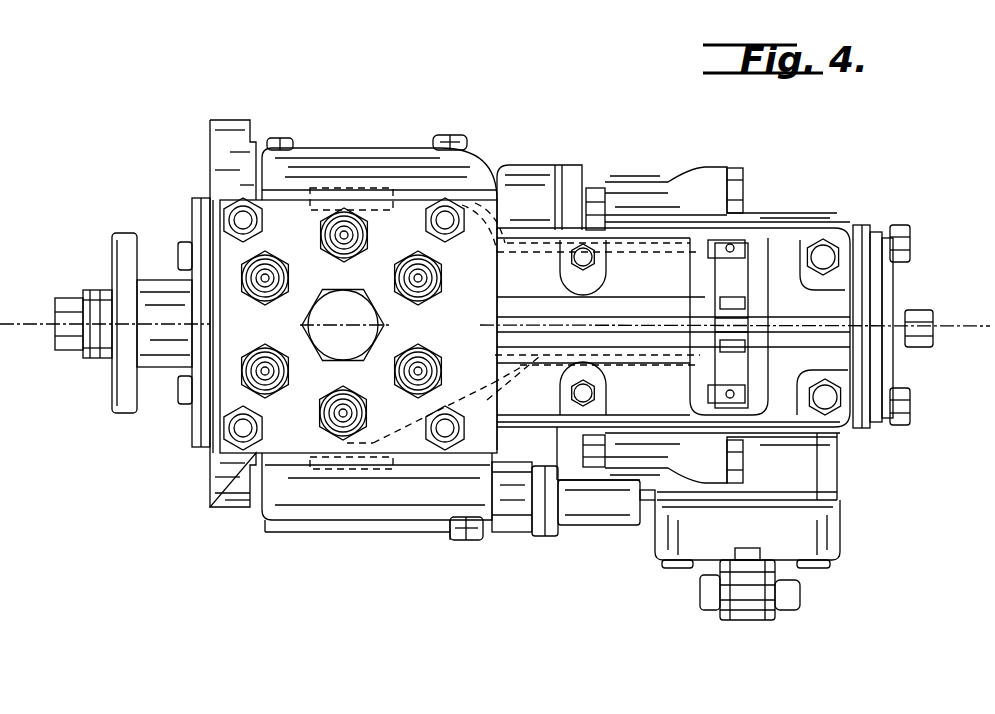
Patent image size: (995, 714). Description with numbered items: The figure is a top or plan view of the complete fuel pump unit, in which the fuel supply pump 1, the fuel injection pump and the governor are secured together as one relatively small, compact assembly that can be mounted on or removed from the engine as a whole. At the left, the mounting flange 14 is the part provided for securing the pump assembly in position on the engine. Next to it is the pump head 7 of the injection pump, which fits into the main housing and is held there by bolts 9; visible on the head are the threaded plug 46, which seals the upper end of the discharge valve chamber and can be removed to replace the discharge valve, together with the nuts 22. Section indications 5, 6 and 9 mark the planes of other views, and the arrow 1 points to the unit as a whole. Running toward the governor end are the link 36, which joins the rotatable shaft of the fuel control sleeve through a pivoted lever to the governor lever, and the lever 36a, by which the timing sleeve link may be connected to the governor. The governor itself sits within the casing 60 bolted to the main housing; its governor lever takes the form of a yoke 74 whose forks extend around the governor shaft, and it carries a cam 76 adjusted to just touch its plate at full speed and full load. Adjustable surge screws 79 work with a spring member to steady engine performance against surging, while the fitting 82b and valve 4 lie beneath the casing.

The fuel supply pump 1 is at (466, 549).
The valve 4 is at (723, 587).
The section line 5- 5 is at (26, 363).
The section line 6- 6 is at (345, 615).
The pump head 7 is at (422, 330).
The bolts 9 is at (300, 354).
The mounting flange 14 is at (218, 158).
The plunger nuts 22 is at (333, 235).
The link 36 is at (510, 390).
The lever 36a is at (512, 250).
The threaded plug 46 is at (352, 350).
The casing 60 is at (807, 460).
The yoke 74 is at (737, 283).
The cam 76 is at (693, 297).
The surge screws 79 is at (918, 310).
The fitting 82b is at (648, 500).